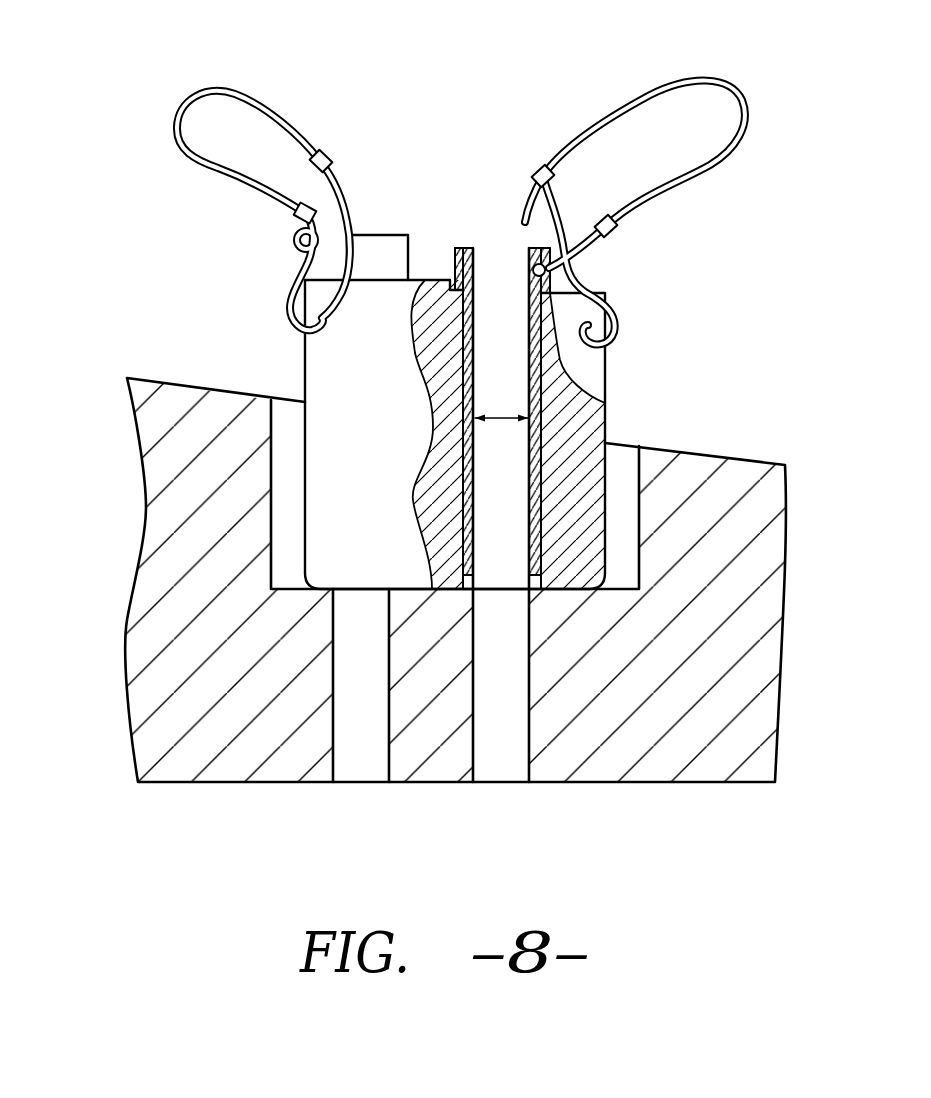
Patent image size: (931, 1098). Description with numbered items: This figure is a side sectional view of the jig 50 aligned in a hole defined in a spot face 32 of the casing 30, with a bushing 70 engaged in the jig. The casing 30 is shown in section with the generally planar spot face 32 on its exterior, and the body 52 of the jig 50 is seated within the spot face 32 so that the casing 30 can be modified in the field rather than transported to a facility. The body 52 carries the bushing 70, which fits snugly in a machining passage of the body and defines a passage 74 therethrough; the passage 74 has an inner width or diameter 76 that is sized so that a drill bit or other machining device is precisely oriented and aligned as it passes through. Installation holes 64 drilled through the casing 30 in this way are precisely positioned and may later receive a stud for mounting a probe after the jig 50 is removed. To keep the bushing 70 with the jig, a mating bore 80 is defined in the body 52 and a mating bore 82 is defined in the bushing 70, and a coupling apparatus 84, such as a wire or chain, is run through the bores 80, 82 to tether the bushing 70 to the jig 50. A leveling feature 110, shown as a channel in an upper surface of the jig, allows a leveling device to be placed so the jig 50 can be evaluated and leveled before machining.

The casing 30 is at (123, 430).
The spot face 32 is at (293, 586).
The jig 50 is at (479, 298).
The body 52 is at (303, 337).
The installation hole 64 is at (363, 752).
The bushing 70 is at (462, 242).
The passage 74 is at (505, 282).
The inner width or diameter 76 is at (500, 422).
The mating bore 80 is at (319, 340).
The mating bore 82 is at (549, 270).
The coupling apparatus 84 is at (705, 170).
The leveling feature 110 is at (453, 323).